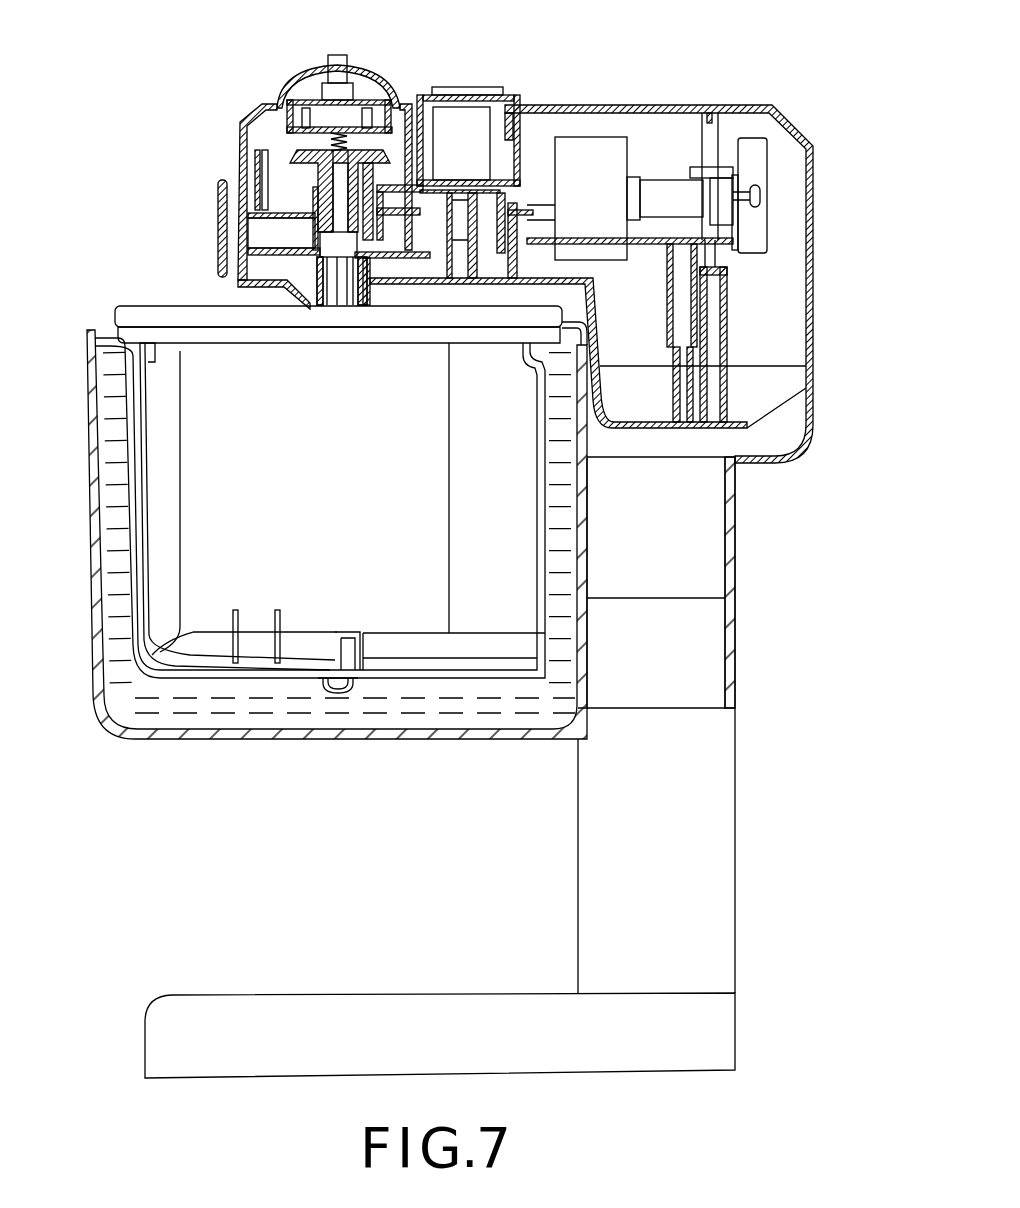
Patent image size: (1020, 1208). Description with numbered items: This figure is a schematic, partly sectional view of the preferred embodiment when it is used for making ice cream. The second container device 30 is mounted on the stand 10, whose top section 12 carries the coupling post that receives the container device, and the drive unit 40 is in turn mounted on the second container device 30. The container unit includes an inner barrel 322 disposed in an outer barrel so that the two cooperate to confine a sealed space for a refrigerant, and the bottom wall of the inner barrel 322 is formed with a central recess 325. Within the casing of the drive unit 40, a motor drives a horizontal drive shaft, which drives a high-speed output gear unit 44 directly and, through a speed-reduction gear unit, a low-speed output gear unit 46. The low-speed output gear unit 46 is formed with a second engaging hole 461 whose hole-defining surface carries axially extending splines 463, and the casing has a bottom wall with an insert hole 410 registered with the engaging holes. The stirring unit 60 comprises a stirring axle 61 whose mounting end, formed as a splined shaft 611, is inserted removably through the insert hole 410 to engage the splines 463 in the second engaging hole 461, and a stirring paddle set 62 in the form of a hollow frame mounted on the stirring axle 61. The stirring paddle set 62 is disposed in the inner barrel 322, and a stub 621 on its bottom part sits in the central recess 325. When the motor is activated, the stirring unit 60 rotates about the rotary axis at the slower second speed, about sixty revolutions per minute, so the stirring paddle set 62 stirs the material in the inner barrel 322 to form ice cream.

The stand 10 is at (700, 758).
The top section 12 is at (668, 717).
The second container device 30 is at (84, 338).
The stirring unit 60 is at (190, 303).
The stirring axle 61 is at (287, 150).
The splined shaft 611 is at (333, 280).
The splines 463 is at (342, 281).
The second engaging hole 461 is at (243, 215).
The high-speed output gear unit 44 is at (389, 137).
The low-speed output gear unit 46 is at (418, 165).
The drive unit 40 is at (592, 102).
The insert hole 410 is at (362, 305).
The stirring paddle set 62 is at (157, 605).
The inner barrel 322 is at (150, 680).
The stub 621 is at (338, 682).
The central recess 325 is at (342, 690).